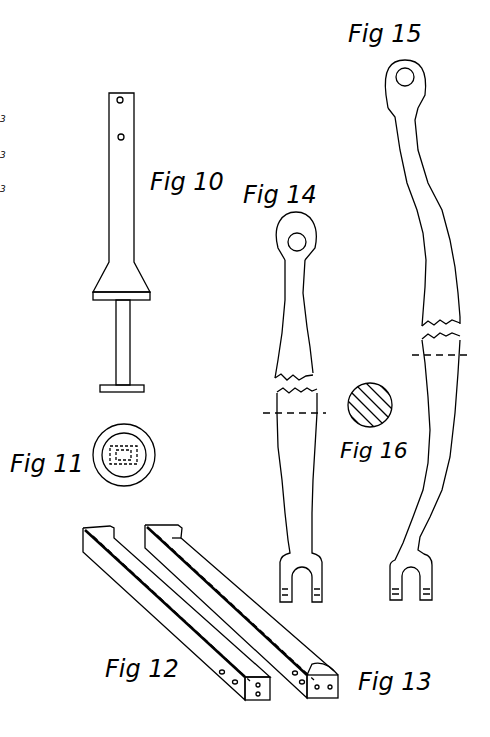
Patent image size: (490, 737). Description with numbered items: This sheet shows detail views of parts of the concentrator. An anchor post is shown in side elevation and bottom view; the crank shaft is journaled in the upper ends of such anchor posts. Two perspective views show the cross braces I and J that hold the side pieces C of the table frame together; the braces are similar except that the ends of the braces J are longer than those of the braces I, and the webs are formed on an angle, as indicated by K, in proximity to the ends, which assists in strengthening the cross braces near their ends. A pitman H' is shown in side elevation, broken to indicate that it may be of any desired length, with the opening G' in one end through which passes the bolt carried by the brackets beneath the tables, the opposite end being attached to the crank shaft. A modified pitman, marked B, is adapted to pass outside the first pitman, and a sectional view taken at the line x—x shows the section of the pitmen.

In FIG. 12, the cross brace I is at (116, 577).
In FIG. 13, the cross brace J is at (223, 582).
In FIG. 13, the angled web K is at (190, 530).
In FIG. 14, the opening in pitman G' is at (313, 236).
In FIG. 14, the pitman H' is at (298, 431).
In FIG. 15, the eye of handle B is at (415, 84).
In FIG. 15, the shank of handle C is at (440, 252).